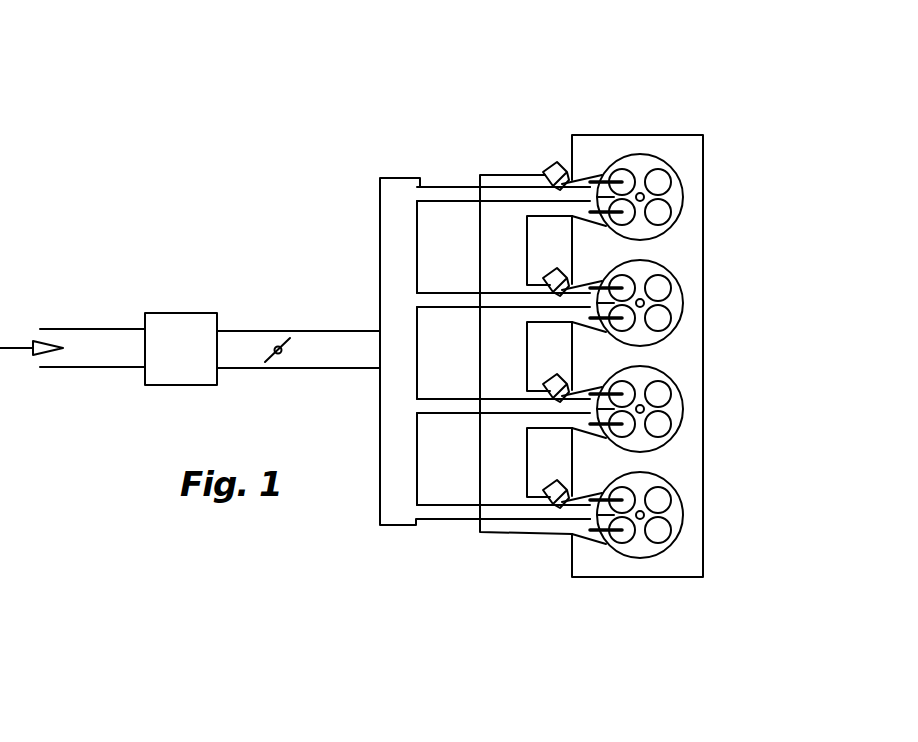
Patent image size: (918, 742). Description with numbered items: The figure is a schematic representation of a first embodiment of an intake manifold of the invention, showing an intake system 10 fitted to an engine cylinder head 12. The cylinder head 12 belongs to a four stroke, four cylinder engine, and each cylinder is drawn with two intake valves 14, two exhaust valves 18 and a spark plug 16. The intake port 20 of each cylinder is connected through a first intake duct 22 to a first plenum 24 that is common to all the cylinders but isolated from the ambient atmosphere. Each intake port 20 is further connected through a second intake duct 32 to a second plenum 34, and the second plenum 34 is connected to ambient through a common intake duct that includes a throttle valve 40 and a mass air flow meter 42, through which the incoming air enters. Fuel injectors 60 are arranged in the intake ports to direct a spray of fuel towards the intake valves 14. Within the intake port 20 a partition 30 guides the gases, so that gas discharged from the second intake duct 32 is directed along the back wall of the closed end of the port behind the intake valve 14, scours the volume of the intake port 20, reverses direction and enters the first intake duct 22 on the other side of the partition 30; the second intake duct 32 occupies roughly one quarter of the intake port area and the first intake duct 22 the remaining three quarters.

The intake system 10 is at (288, 208).
The engine cylinder head 12 is at (683, 355).
The intake valves 14 is at (630, 545).
The spark plug 16 is at (641, 521).
The exhaust valves 18 is at (667, 516).
The intake port 20 is at (572, 537).
The first intake duct 22 is at (527, 531).
The first plenum 24 is at (500, 462).
The partition 30 is at (598, 177).
The second intake duct 32 is at (517, 194).
The second plenum 34 is at (398, 220).
The throttle valve 40 is at (276, 347).
The mass air flow meter 42 is at (173, 325).
The fuel injectors 60 is at (549, 161).